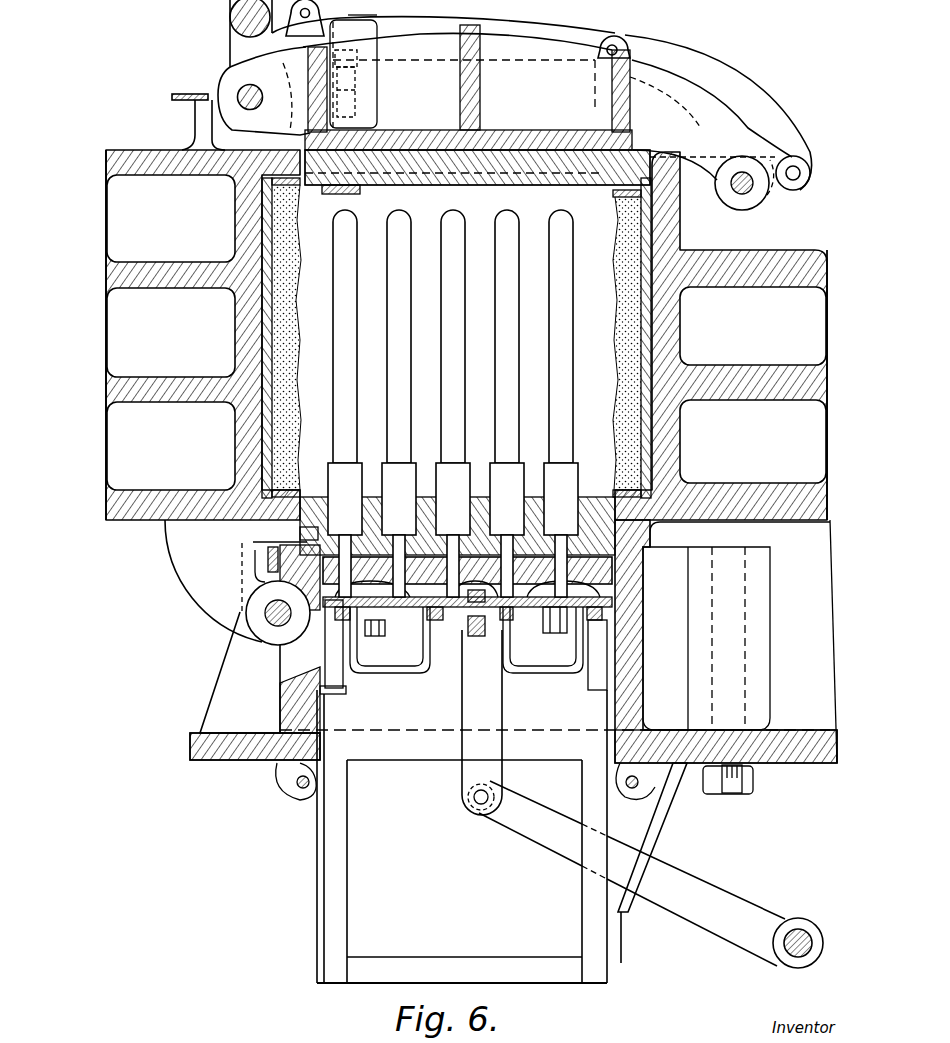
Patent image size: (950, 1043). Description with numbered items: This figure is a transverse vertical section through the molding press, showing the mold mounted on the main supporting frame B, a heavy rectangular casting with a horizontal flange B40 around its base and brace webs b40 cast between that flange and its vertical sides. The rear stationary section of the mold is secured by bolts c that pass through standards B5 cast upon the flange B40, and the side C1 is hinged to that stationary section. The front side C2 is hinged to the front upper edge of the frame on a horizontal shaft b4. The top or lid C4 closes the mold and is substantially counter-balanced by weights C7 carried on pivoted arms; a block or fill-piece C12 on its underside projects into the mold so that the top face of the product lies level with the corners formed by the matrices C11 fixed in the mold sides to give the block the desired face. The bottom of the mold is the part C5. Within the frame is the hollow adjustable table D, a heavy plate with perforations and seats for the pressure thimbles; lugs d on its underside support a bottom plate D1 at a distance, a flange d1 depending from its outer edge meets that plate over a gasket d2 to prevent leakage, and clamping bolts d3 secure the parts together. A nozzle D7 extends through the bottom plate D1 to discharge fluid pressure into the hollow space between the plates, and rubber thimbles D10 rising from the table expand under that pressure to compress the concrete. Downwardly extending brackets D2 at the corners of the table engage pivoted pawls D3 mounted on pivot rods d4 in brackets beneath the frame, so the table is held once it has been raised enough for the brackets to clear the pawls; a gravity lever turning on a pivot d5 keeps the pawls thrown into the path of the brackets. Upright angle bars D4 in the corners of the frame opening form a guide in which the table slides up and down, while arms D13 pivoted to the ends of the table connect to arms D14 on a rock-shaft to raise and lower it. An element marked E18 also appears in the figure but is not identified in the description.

The counter-balancing weights C7 is at (246, 91).
The top or lid of the mold C4 is at (545, 134).
The fastening bolt E18 is at (356, 196).
The block or fill-piece C12 is at (447, 186).
The front side of the mold C2 is at (246, 339).
The side of the mold C1 is at (676, 343).
The matrices C11 is at (292, 330).
The bottom of the mold C5 is at (597, 504).
The fluid pressure table D is at (613, 574).
The flange d1 is at (613, 598).
The lugs d is at (423, 594).
The rubber thimble D10 is at (344, 425).
The bolts c is at (735, 543).
The main supporting frame B is at (287, 718).
The standards B5 is at (776, 664).
The brace webs b40 is at (233, 663).
The horizontal shaft b4 is at (266, 606).
The bottom plate D1 is at (389, 630).
The clamping bolts d3 is at (480, 650).
The gasket d2 is at (572, 612).
The nozzle D7 is at (482, 640).
The downwardly extending arms D13 is at (489, 722).
The arms D14 is at (651, 874).
The pivot rods d4 is at (646, 800).
The pivot d5 is at (656, 776).
The horizontal flange B40 is at (216, 762).
The brackets D2 is at (336, 672).
The pawls D3 is at (338, 714).
The upright angle bars D4 is at (345, 878).